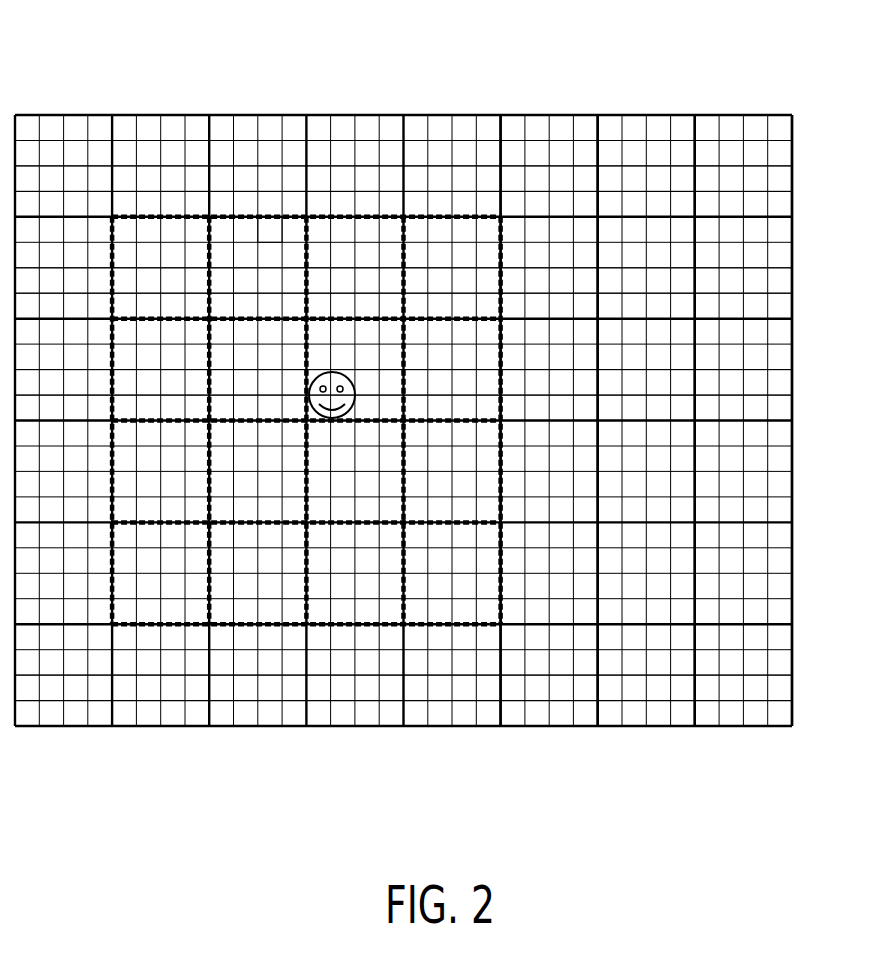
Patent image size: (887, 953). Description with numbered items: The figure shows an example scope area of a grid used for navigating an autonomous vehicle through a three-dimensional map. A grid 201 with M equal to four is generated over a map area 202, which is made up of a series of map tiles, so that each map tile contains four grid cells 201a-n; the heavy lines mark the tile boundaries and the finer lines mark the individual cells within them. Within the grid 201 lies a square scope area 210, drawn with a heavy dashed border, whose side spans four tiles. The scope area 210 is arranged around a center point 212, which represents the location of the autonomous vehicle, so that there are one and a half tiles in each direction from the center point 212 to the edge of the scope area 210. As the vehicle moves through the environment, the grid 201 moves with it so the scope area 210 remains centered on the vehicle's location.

The scope area 210 is at (148, 200).
The grid 201 is at (270, 228).
The center point 212 is at (333, 372).
The grid cells 201a-n is at (598, 115).
The map area 202 is at (708, 115).